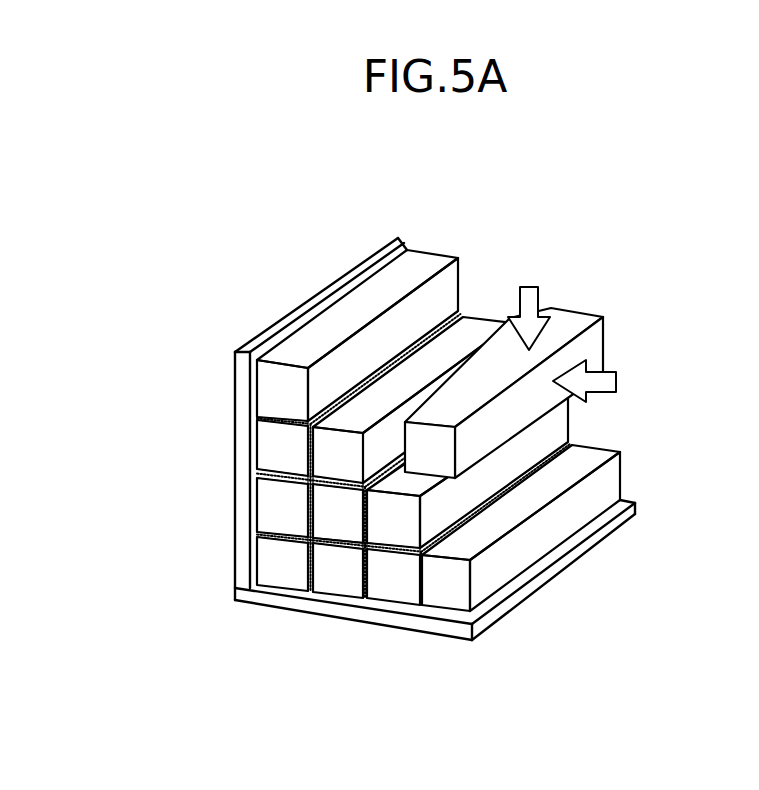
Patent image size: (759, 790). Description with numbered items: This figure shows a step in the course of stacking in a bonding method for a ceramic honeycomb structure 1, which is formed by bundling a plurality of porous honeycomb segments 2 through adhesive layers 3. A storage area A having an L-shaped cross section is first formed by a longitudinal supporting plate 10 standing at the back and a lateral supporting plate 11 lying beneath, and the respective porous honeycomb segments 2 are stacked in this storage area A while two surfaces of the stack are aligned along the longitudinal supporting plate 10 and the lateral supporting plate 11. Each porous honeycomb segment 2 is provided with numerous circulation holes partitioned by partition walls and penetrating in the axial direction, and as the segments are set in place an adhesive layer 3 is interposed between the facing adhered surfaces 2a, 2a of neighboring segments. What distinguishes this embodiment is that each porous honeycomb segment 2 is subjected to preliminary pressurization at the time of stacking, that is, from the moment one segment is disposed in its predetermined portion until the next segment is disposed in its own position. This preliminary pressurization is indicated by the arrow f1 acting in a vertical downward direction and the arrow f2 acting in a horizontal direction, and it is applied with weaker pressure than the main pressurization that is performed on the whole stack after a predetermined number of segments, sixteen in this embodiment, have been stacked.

The ceramic honeycomb structure 1 is at (622, 296).
The porous honeycomb segment 2 is at (297, 517).
The adhered surface 2a is at (463, 367).
The adhesive layer 3 is at (255, 420).
The longitudinal supporting plate 10 is at (240, 393).
The lateral supporting plate 11 is at (428, 622).
The storage area A is at (258, 568).
The arrow indicating preliminary pressurization f1 is at (529, 287).
The arrow indicating preliminary pressurization f2 is at (616, 383).